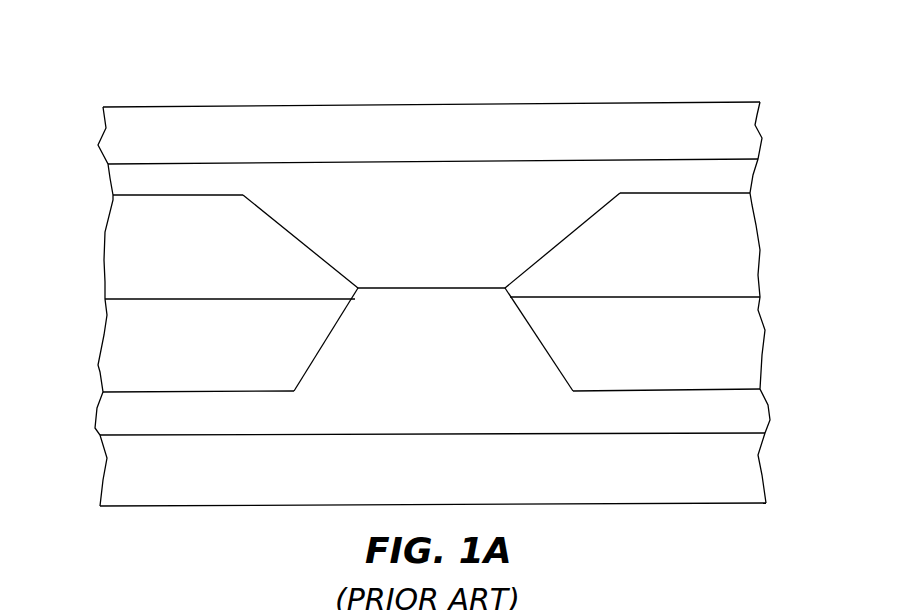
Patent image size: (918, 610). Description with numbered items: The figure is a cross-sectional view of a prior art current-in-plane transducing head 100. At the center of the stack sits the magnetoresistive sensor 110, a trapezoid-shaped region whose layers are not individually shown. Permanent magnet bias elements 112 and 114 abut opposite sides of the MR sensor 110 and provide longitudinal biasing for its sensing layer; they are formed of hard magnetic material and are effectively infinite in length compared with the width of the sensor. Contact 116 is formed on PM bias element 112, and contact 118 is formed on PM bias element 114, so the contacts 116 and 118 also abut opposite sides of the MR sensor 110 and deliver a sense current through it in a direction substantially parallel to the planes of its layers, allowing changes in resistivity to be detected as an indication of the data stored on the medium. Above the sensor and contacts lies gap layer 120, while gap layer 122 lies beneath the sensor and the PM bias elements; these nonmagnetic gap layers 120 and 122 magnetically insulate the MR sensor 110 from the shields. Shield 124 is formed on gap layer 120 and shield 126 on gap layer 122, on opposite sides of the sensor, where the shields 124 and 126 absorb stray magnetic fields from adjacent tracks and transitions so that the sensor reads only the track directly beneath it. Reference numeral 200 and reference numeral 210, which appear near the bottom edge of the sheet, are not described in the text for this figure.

The current-in-plane transducing head 100 is at (158, 72).
The magnetoresistive sensor 110 is at (473, 312).
The permanent magnet bias element 112 is at (137, 322).
The permanent magnet bias element 114 is at (732, 326).
The contact 116 is at (168, 265).
The contact 118 is at (728, 244).
The gap layer 120 is at (722, 185).
The gap layer 122 is at (728, 421).
The shield 124 is at (728, 136).
The shield 126 is at (730, 480).
The semiconductor device 200 is at (160, 608).
The layer 210 is at (600, 609).